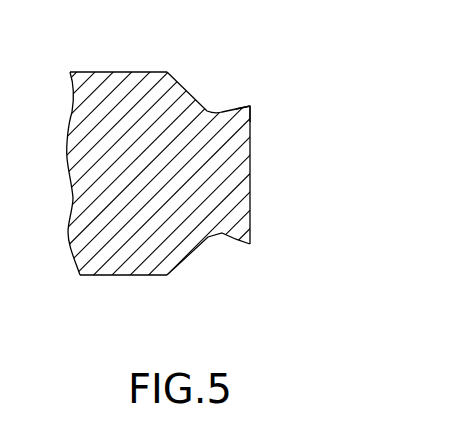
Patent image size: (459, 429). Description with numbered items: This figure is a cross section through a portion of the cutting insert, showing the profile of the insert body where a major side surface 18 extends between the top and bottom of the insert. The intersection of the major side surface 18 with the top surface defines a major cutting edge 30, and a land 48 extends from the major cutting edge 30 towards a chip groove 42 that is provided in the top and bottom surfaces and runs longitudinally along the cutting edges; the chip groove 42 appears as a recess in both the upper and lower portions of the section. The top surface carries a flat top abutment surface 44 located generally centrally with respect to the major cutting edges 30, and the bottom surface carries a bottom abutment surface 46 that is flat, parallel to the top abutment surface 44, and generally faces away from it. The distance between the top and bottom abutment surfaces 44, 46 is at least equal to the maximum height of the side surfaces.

The major side surface 18 is at (250, 163).
The major cutting edge 30 is at (250, 106).
The chip groove 42 is at (217, 80).
The top abutment surface 44 is at (110, 72).
The bottom abutment surface 46 is at (117, 275).
The land 48 is at (250, 106).